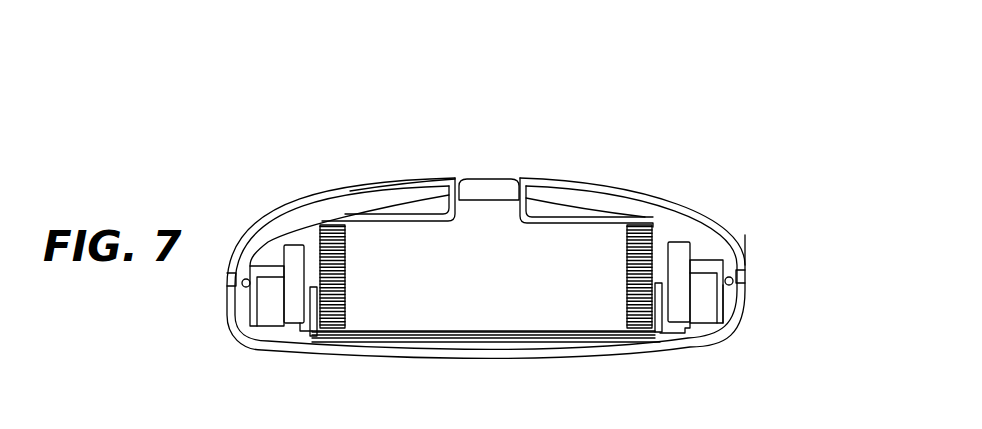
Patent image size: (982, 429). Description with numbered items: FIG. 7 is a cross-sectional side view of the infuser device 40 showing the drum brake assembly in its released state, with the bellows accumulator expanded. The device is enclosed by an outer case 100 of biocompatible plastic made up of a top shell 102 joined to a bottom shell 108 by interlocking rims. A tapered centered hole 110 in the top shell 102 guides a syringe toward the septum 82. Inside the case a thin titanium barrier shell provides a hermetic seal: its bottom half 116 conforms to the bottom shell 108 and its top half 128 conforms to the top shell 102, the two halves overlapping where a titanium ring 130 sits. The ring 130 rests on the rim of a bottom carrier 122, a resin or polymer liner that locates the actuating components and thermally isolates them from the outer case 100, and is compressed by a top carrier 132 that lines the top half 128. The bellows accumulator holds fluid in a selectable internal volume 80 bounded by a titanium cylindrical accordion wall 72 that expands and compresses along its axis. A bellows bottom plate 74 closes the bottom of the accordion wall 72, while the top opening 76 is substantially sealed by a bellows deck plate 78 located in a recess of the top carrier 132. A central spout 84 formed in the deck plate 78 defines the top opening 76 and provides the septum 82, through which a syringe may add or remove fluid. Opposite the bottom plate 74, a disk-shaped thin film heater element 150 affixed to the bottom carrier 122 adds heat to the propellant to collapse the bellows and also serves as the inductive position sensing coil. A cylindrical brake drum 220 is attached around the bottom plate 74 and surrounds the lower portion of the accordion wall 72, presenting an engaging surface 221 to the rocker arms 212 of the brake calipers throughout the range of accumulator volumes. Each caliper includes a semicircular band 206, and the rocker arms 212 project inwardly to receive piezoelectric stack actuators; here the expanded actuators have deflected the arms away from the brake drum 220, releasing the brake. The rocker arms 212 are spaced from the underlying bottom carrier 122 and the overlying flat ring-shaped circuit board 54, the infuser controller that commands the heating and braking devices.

The infuser device 40 is at (298, 174).
The top opening 76 is at (469, 160).
The septum 82 is at (500, 170).
The tapered centered hole 110 is at (520, 178).
The central spout 84 is at (565, 217).
The bellows deck plate 78 is at (622, 205).
The top carrier 132 is at (667, 205).
The top half of thin barrier enclosure 128 is at (642, 221).
The rocker arm 212 is at (292, 260).
The circuit board 54 is at (707, 267).
The top shell 102 is at (745, 243).
The titanium ring 130 is at (744, 282).
The semicircular band 206 is at (724, 300).
The outer case 100 is at (759, 326).
The bottom shell 108 is at (727, 340).
The bottom half of thin barrier shell 116 is at (704, 334).
The bottom carrier 122 is at (689, 328).
The heater element 150 is at (503, 341).
The bellows bottom plate 74 is at (465, 331).
The accordion wall 72 is at (345, 290).
The selectable internal volume 80 is at (499, 273).
The brake drum 220 is at (312, 307).
The engaging surface 221 is at (284, 326).